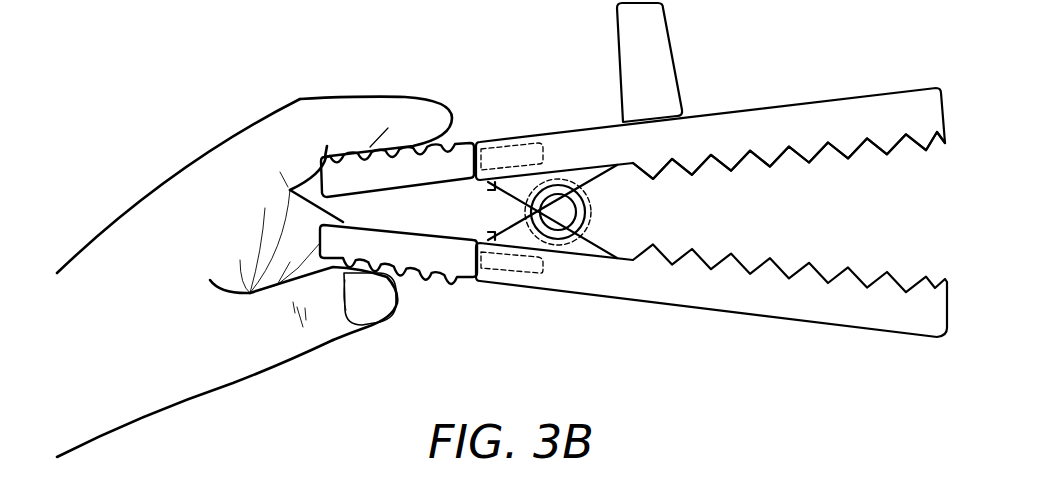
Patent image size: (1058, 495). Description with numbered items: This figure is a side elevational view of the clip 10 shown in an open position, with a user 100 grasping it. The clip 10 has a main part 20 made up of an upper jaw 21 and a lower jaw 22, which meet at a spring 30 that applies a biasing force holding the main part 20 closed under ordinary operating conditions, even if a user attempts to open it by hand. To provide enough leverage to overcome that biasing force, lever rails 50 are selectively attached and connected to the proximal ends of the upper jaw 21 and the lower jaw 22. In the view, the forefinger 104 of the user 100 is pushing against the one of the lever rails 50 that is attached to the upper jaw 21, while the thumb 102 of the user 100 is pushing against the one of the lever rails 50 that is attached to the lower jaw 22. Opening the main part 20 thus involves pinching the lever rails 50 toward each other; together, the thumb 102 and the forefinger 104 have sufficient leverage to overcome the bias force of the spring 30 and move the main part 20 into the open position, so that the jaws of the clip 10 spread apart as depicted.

The clip 10 is at (745, 368).
The main part 20 is at (710, 121).
The upper jaw 21 is at (903, 88).
The lower jaw 22 is at (815, 325).
The spring 30 is at (585, 240).
The lever rails 50 is at (458, 142).
The user 100 is at (110, 227).
The thumb 102 is at (300, 357).
The forefinger 104 is at (373, 97).